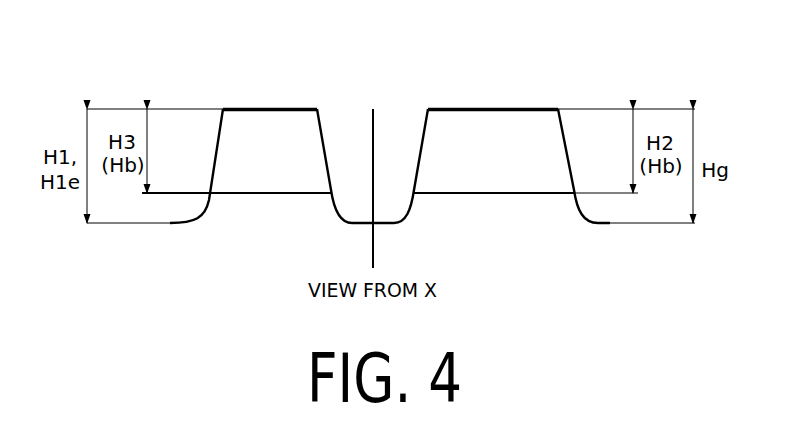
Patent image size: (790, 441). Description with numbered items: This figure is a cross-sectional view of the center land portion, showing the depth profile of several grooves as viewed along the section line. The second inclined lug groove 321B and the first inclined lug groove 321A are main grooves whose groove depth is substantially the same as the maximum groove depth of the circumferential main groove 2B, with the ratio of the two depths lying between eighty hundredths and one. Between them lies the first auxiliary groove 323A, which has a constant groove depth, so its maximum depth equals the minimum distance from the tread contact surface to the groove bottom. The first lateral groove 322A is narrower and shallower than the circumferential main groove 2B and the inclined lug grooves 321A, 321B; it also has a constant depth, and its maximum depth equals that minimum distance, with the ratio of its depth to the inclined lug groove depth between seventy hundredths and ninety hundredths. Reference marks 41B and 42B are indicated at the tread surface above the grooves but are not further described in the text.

The second inclined lug groove 321B is at (187, 128).
The first auxiliary groove 323A is at (288, 128).
The first electrode 41B is at (273, 99).
The first inclined lug groove 321A is at (400, 128).
The first lateral groove 322A is at (473, 128).
The second electrode 42B is at (540, 99).
The circumferential main groove 2B is at (593, 128).